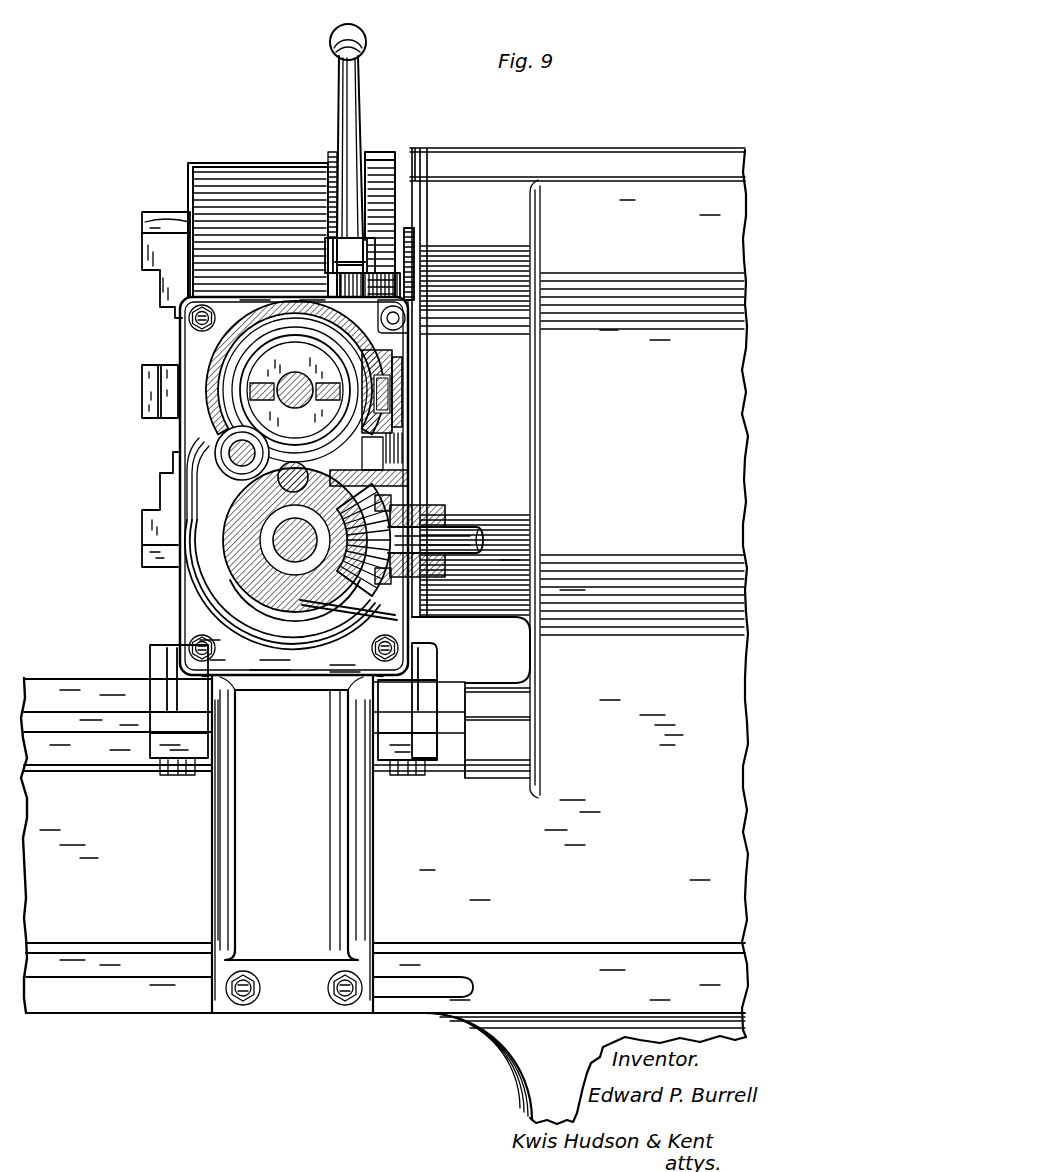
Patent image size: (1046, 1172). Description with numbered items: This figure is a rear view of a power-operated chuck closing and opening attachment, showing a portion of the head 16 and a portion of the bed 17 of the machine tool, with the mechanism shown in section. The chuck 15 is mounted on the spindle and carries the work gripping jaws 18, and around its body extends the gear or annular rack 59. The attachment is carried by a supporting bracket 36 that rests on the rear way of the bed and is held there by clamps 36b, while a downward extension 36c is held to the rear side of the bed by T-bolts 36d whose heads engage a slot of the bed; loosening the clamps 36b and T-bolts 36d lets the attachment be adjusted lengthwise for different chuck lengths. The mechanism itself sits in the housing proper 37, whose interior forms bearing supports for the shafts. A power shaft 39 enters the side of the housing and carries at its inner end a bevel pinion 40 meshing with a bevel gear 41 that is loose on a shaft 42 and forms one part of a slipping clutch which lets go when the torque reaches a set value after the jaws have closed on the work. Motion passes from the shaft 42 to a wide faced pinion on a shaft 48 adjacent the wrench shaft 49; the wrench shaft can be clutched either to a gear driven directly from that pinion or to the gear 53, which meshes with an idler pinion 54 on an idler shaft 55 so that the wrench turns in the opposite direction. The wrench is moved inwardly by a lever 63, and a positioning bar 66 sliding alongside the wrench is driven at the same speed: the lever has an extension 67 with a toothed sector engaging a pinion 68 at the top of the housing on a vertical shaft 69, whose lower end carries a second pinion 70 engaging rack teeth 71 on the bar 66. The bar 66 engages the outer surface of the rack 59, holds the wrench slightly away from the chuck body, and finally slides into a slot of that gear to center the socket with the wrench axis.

The chuck 15 is at (225, 226).
The head 16 is at (600, 215).
The bed 17 is at (40, 716).
The work gripping jaws 18 is at (152, 253).
The supporting bracket 36 is at (425, 662).
The clamps 36b is at (152, 750).
The downward extension 36c is at (215, 848).
The T-bolts 36d is at (248, 992).
The housing proper 37 is at (200, 590).
The power shaft 39 is at (450, 530).
The bevel pinion 40 is at (392, 497).
The bevel gear 41 is at (392, 616).
The shaft 42 is at (275, 594).
The shaft 48 is at (240, 516).
The wrench shaft 49 is at (300, 376).
The gear 53 is at (257, 360).
The idler pinion 54 is at (220, 446).
The idler shaft 55 is at (232, 464).
The annular rack 59 is at (375, 158).
The lever 63 is at (364, 34).
The positioning bar 66 is at (340, 388).
The extension 67 is at (385, 265).
The pinion 68 is at (348, 268).
The vertical shaft 69 is at (405, 314).
The second pinion 70 is at (343, 467).
The rack teeth 71 is at (420, 405).